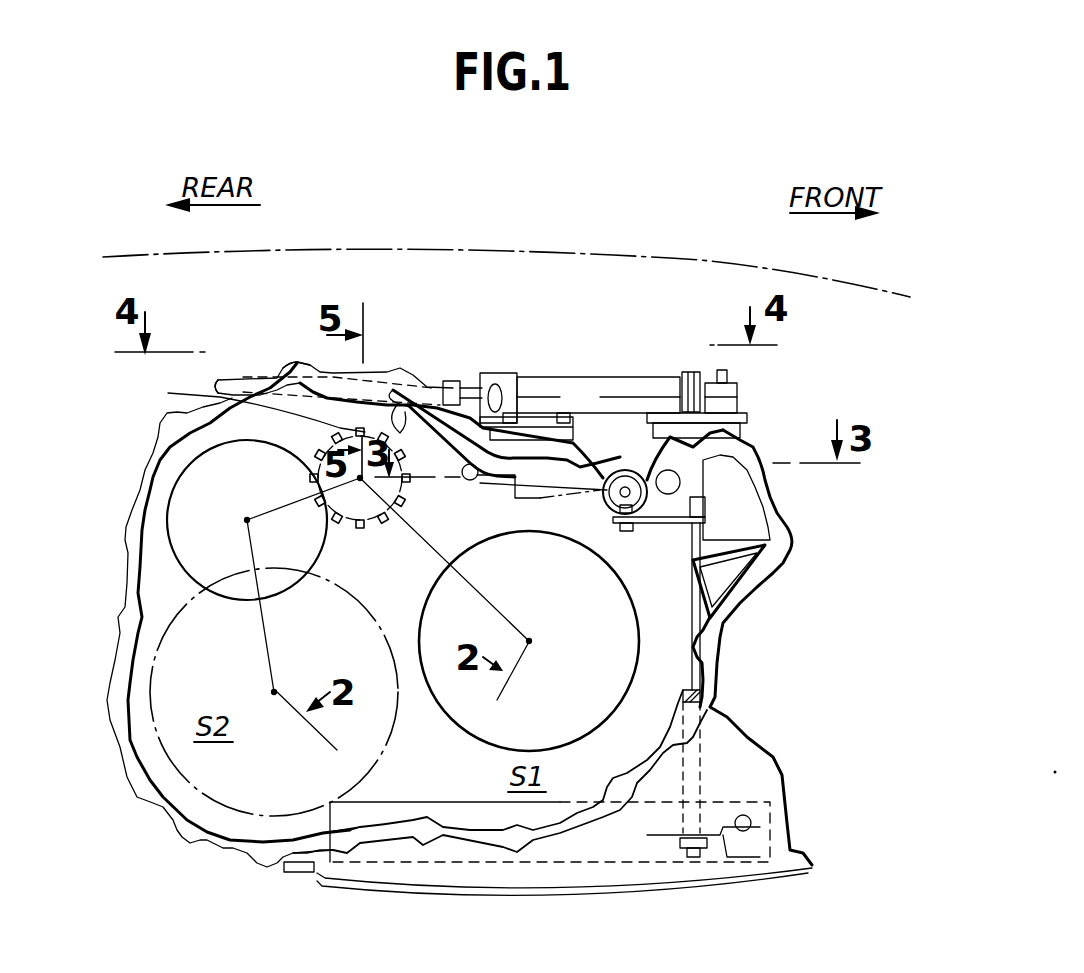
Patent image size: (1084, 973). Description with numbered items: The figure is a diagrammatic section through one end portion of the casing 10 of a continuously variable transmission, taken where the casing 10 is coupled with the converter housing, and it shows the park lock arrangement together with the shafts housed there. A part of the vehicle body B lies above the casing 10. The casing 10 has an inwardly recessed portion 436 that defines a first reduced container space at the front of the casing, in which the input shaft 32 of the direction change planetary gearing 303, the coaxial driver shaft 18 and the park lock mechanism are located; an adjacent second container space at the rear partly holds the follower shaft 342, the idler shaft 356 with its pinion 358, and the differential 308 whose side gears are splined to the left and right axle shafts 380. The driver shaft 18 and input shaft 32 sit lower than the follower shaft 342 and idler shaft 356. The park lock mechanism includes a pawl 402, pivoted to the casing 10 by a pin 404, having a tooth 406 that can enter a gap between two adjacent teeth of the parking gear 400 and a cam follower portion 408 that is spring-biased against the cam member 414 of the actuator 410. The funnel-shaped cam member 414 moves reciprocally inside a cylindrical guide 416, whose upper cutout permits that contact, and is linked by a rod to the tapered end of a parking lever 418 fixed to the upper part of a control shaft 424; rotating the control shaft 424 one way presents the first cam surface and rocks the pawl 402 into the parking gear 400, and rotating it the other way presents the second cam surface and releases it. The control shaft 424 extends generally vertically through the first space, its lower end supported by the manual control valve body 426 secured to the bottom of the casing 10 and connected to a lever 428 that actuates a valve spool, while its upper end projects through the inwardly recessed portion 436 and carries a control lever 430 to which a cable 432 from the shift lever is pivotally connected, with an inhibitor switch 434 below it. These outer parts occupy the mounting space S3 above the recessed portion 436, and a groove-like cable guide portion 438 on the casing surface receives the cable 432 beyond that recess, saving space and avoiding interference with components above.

The vehicle body B is at (620, 243).
The casing 10 is at (163, 810).
The input shaft 32 is at (534, 640).
The driver shaft 18 is at (529, 641).
The direction change planetary gearing 303 is at (442, 706).
The differential 308 is at (243, 807).
The follower shaft 342 is at (360, 480).
The idler shaft 356 is at (247, 520).
The pinion 358 is at (222, 596).
The axle shafts 380 is at (273, 700).
The parking gear 400 is at (220, 397).
The pawl 402 is at (442, 440).
The pin 404 is at (470, 481).
The tooth 406 is at (402, 422).
The cam follower portion 408 is at (623, 470).
The actuator 410 is at (730, 502).
The cam member 414 is at (603, 503).
The cylindrical guide 416 is at (618, 531).
The parking lever 418 is at (723, 543).
The control shaft 424 is at (690, 677).
The manual control valve body 426 is at (557, 813).
The lever 428 is at (727, 820).
The control lever 430 is at (727, 403).
The cable 432 is at (235, 392).
The inhibitor switch 434 is at (745, 438).
The inwardly recessed portion 436 is at (595, 440).
The cable guide portion 438 is at (318, 380).
The mounting space S3 is at (583, 398).